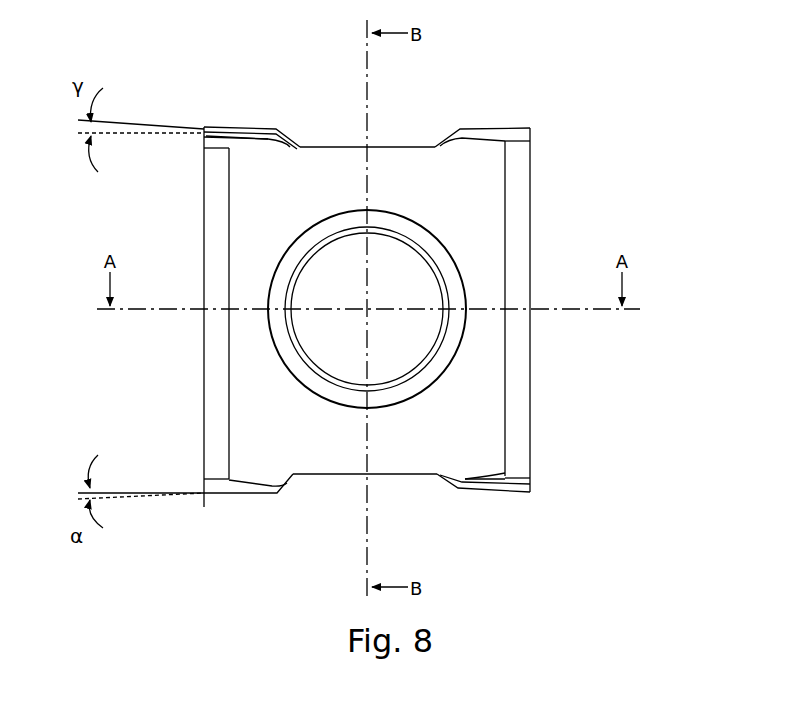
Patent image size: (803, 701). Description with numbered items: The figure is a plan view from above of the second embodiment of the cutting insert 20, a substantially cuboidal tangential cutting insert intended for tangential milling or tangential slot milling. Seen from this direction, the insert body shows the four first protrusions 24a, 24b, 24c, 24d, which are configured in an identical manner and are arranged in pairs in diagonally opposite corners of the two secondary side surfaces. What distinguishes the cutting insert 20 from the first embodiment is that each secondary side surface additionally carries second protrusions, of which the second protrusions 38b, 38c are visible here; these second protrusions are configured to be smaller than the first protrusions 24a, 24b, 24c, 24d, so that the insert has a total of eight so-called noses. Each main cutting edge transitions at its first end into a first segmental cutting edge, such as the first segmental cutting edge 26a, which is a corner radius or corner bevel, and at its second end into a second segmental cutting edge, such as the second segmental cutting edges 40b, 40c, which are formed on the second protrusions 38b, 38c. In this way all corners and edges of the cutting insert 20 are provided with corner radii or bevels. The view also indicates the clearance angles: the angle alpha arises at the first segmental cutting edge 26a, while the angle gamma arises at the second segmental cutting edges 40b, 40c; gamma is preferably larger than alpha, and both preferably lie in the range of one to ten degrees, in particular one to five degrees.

The cutting insert 20 is at (624, 104).
The first protrusion 24a is at (219, 489).
The first protrusion 24b is at (222, 131).
The first protrusion 24c is at (520, 495).
The first protrusion 24d is at (520, 131).
The first segmental cutting edge 26a is at (204, 505).
The second protrusion 38b is at (214, 139).
The second protrusion 38c is at (523, 478).
The second segmental cutting edge 40b is at (203, 131).
The second segmental cutting edge 40c is at (532, 489).